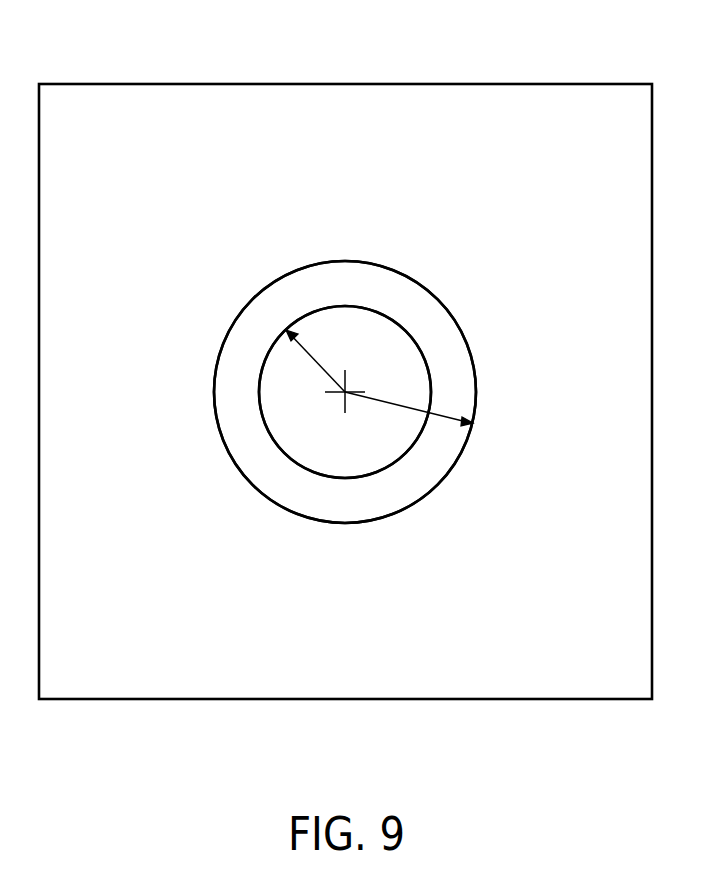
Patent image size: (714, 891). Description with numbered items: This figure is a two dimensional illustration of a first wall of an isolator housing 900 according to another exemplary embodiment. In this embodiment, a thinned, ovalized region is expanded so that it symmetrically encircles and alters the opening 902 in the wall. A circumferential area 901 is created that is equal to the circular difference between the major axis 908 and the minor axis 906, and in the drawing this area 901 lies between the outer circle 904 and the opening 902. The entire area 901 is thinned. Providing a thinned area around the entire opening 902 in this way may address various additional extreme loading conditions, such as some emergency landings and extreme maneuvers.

The isolator housing 900 is at (93, 84).
The circumferential area 901 is at (435, 327).
The opening 902 is at (273, 454).
The circle 904 is at (344, 522).
The minor axis 906 is at (315, 358).
The major axis 908 is at (395, 405).